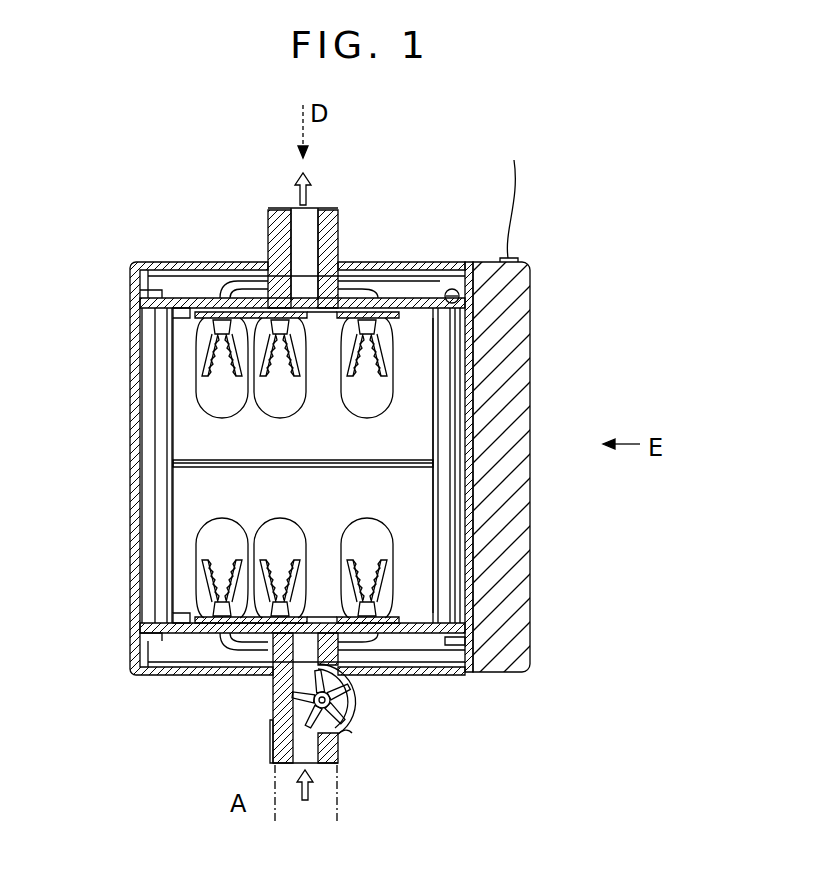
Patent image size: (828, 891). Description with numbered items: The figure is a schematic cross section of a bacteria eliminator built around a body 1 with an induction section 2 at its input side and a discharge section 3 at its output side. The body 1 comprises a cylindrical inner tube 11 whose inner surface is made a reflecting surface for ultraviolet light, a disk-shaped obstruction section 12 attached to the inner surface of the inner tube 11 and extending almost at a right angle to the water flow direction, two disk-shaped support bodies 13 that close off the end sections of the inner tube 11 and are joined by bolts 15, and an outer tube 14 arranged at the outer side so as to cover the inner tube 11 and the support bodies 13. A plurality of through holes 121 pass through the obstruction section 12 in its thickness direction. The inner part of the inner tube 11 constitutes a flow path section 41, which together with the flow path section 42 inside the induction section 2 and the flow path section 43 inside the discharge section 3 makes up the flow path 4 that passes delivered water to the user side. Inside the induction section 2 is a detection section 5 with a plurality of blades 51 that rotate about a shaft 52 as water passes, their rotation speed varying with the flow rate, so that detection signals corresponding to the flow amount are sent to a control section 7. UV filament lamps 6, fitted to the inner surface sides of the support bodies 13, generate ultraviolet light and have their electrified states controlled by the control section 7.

The body 1 is at (455, 280).
The induction section 2 is at (273, 690).
The discharge section 3 is at (340, 216).
The flow path 4 is at (410, 600).
The flow path section 41 is at (466, 484).
The flow path section 42 is at (322, 750).
The flow path section 43 is at (305, 247).
The detection section 5 is at (369, 706).
The blades 51 is at (340, 726).
The shaft 52 is at (348, 705).
The UV filament lamps 6 is at (210, 418).
The control section 7 is at (530, 462).
The inner tube 11 is at (440, 566).
The obstruction section 12 is at (312, 456).
The through holes 121 is at (210, 470).
The support bodies 13 is at (415, 292).
The outer tube 14 is at (130, 368).
The bolts 15 is at (150, 340).